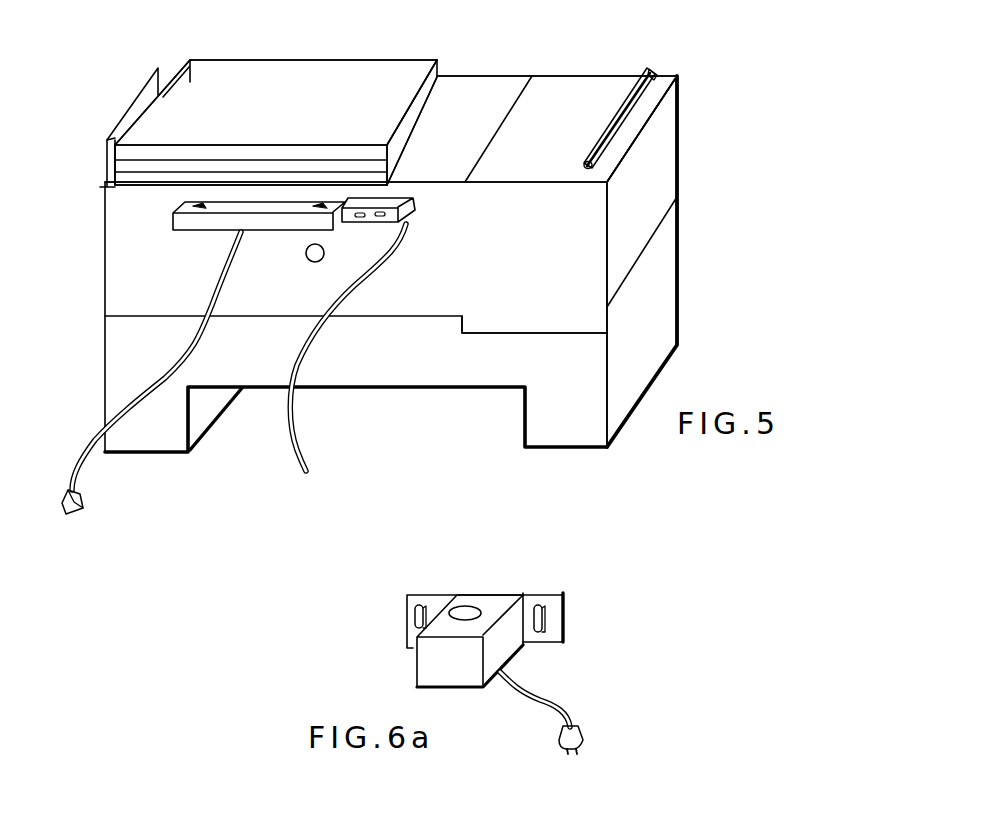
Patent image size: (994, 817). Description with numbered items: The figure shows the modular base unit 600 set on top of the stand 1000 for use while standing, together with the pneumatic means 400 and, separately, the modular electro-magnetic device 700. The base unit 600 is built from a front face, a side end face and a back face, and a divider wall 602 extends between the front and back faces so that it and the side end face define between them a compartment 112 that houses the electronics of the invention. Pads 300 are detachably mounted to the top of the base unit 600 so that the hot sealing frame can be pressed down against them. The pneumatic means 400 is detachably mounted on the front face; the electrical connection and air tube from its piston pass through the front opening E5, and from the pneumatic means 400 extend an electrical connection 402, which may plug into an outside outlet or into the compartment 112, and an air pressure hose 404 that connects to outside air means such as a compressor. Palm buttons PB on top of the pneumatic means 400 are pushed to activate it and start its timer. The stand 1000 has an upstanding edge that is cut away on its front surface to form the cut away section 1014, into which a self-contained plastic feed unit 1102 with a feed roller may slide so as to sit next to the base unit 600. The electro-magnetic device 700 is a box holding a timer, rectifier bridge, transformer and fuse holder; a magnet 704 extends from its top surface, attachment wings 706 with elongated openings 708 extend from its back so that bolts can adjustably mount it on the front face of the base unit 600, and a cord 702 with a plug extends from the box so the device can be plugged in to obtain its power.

In FIG. 5, the pads 300 is at (420, 133).
In FIG. 5, the plastic feed unit 1102 is at (570, 245).
In FIG. 5, the palm buttons PB is at (297, 206).
In FIG. 5, the base unit 600 is at (248, 244).
In FIG. 5, the pneumatic means 400 is at (193, 223).
In FIG. 5, the front opening E5 is at (314, 270).
In FIG. 5, the compartment 112 is at (406, 254).
In FIG. 5, the divider wall 602 is at (373, 270).
In FIG. 5, the cut away section 1014 is at (505, 343).
In FIG. 5, the stand 1000 is at (98, 357).
In FIG. 5, the electrical connection 402 is at (78, 473).
In FIG. 5, the air pressure hose 404 is at (310, 464).
In FIG. 6a, the electro-magnetic device 700 is at (493, 652).
In FIG. 6a, the magnet 704 is at (468, 606).
In FIG. 6a, the elongated openings 708 is at (540, 605).
In FIG. 6a, the attachment wings 706 is at (563, 632).
In FIG. 6a, the power cord 702 is at (565, 708).